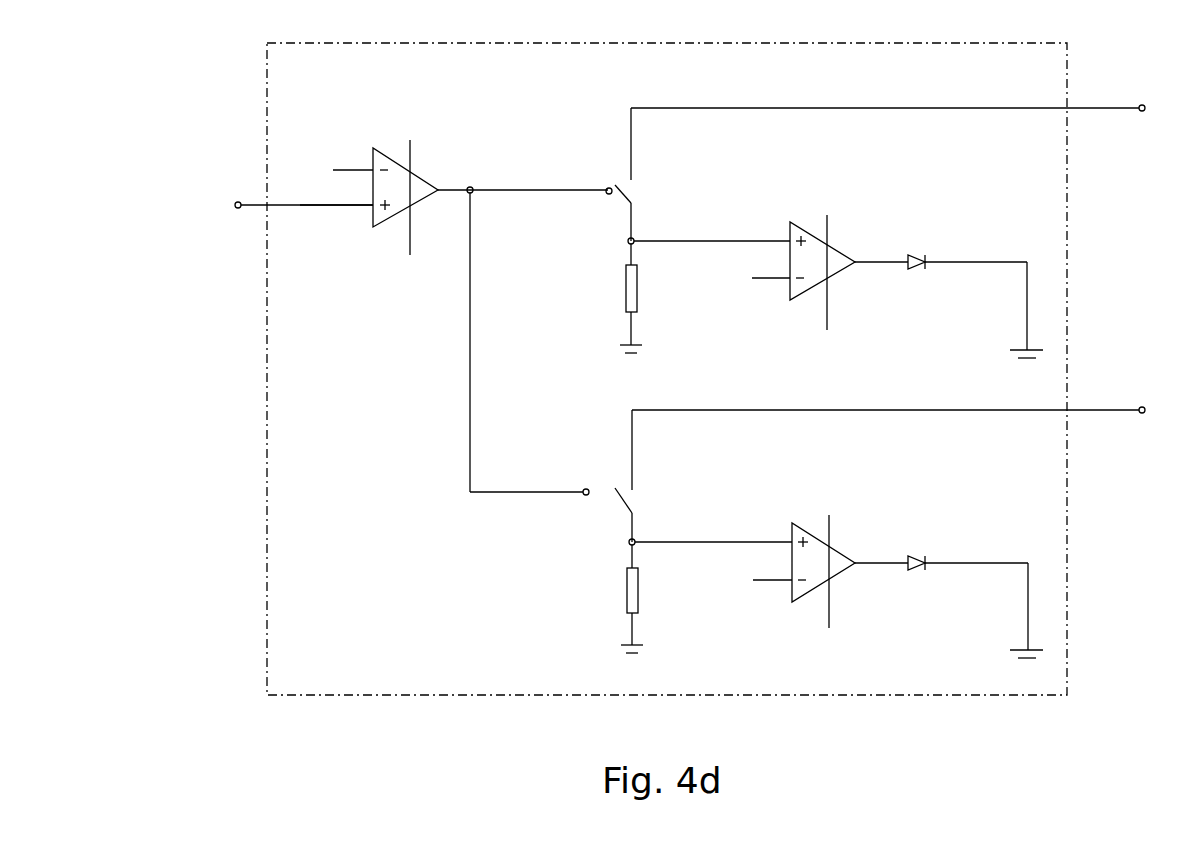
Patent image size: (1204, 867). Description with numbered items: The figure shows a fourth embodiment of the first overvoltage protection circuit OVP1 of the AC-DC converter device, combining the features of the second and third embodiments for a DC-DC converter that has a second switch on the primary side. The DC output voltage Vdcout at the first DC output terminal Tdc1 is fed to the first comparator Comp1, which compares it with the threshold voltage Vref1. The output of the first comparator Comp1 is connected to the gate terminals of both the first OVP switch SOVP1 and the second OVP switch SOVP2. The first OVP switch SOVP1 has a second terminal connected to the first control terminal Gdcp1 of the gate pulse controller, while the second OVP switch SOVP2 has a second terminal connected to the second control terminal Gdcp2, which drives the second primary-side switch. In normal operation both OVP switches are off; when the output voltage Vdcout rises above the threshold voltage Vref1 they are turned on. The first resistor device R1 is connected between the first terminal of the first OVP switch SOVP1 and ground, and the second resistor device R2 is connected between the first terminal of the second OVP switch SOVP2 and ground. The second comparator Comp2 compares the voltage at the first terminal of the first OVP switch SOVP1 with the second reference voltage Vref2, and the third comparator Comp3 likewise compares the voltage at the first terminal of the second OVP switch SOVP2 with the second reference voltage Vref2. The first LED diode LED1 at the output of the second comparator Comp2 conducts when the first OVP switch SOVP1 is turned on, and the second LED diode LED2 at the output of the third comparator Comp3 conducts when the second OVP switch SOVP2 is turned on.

The first overvoltage protection circuit OVP1 is at (290, 517).
The first DC output terminal Tdc1 is at (270, 205).
The DC output voltage Vdcout is at (333, 226).
The threshold voltage Vref1 is at (338, 157).
The first comparator Comp1 is at (490, 197).
The first OVP switch SOVP1 is at (594, 174).
The second OVP switch SOVP2 is at (595, 476).
The first control terminal Gdcp1 is at (911, 89).
The second control terminal Gdcp2 is at (911, 386).
The first resistor device R1 is at (609, 298).
The second resistor device R2 is at (610, 599).
The second comparator Comp2 is at (857, 266).
The third comparator Comp3 is at (860, 565).
The second reference voltage Vref2 is at (750, 292).
The first LED diode LED1 is at (949, 306).
The second LED diode LED2 is at (949, 607).